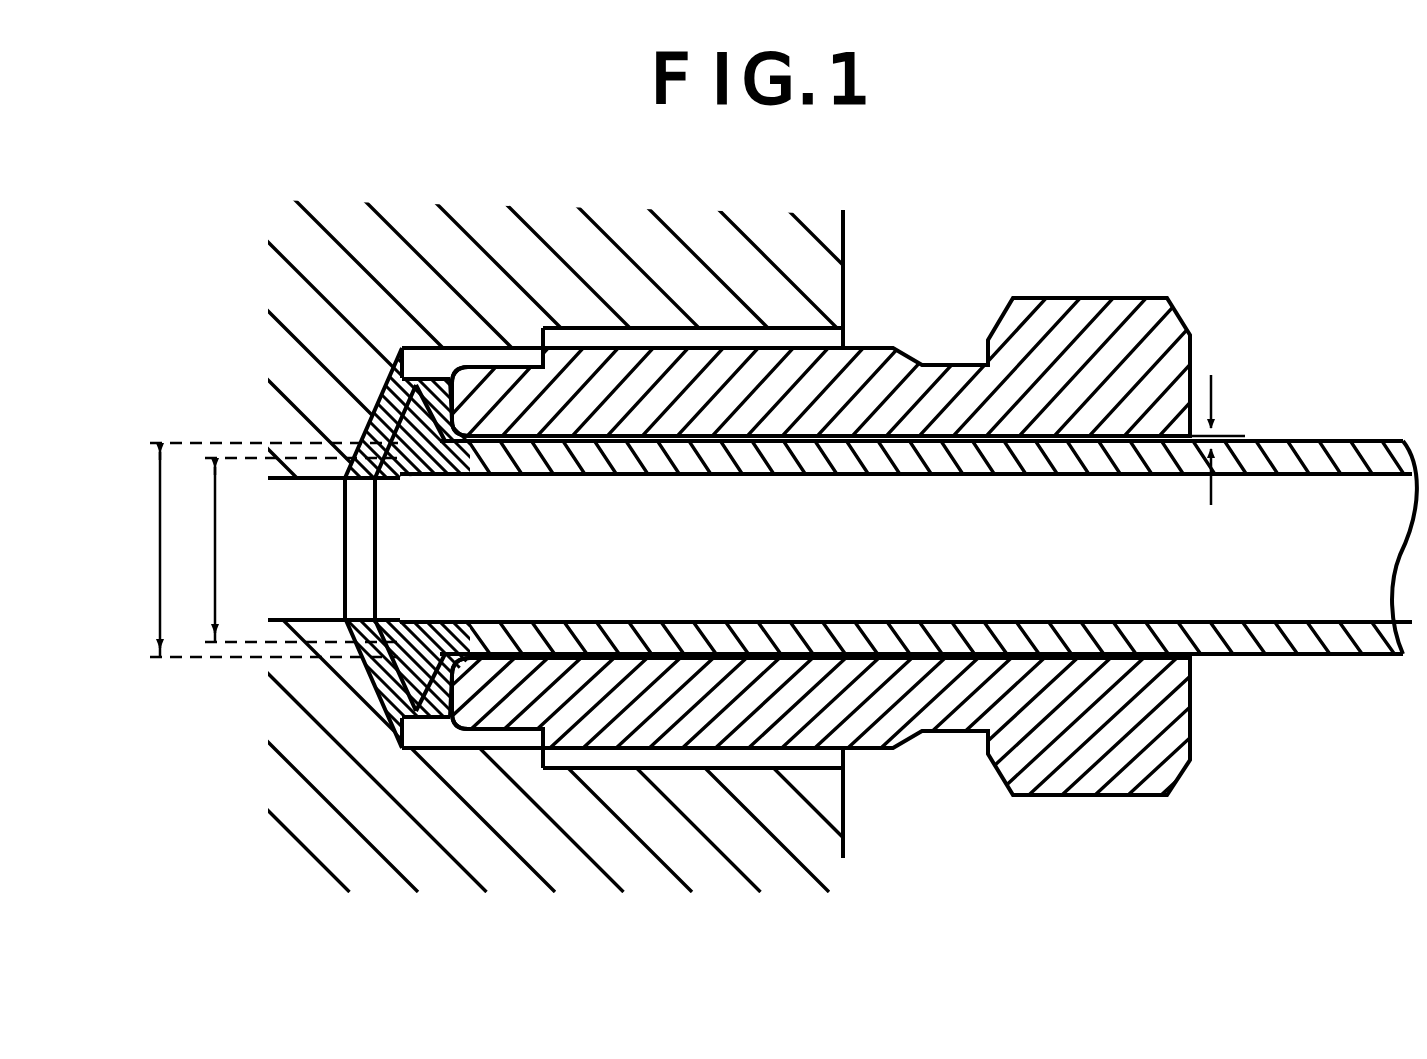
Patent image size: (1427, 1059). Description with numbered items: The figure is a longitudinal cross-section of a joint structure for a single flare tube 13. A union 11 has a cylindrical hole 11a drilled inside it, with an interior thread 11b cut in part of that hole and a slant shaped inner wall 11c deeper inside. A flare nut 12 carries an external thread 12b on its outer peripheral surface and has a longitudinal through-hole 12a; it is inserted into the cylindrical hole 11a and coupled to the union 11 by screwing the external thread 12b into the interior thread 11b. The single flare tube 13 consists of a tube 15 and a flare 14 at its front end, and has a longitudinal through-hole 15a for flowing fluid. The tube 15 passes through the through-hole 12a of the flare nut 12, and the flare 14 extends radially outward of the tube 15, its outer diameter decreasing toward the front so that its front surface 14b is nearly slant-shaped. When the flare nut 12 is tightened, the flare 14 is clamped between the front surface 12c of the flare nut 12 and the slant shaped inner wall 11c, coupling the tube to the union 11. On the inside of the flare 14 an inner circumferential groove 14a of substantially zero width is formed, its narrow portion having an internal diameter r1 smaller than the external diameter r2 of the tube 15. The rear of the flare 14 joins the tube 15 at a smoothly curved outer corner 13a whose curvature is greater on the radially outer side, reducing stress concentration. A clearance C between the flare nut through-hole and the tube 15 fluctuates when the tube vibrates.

The union 11 is at (845, 282).
The cylindrical hole 11a is at (520, 348).
The interior thread 11b is at (558, 328).
The slant shaped inner wall 11c is at (380, 380).
The flare nut 12 is at (950, 363).
The longitudinal through-hole 12a is at (515, 434).
The external thread 12b is at (750, 345).
The front surface 12c is at (466, 372).
The single flare tube 13 is at (1279, 428).
The outer corner 13a is at (400, 483).
The flare 14 is at (421, 380).
The inner circumferential groove 14a is at (425, 392).
The front surface 14b is at (412, 420).
The tube 15 is at (772, 460).
The longitudinal through-hole 15a is at (962, 475).
The internal diameter of the narrow portion of the groove r1 is at (284, 550).
The external diameter of the tube r2 is at (256, 550).
The clearance C is at (1204, 434).